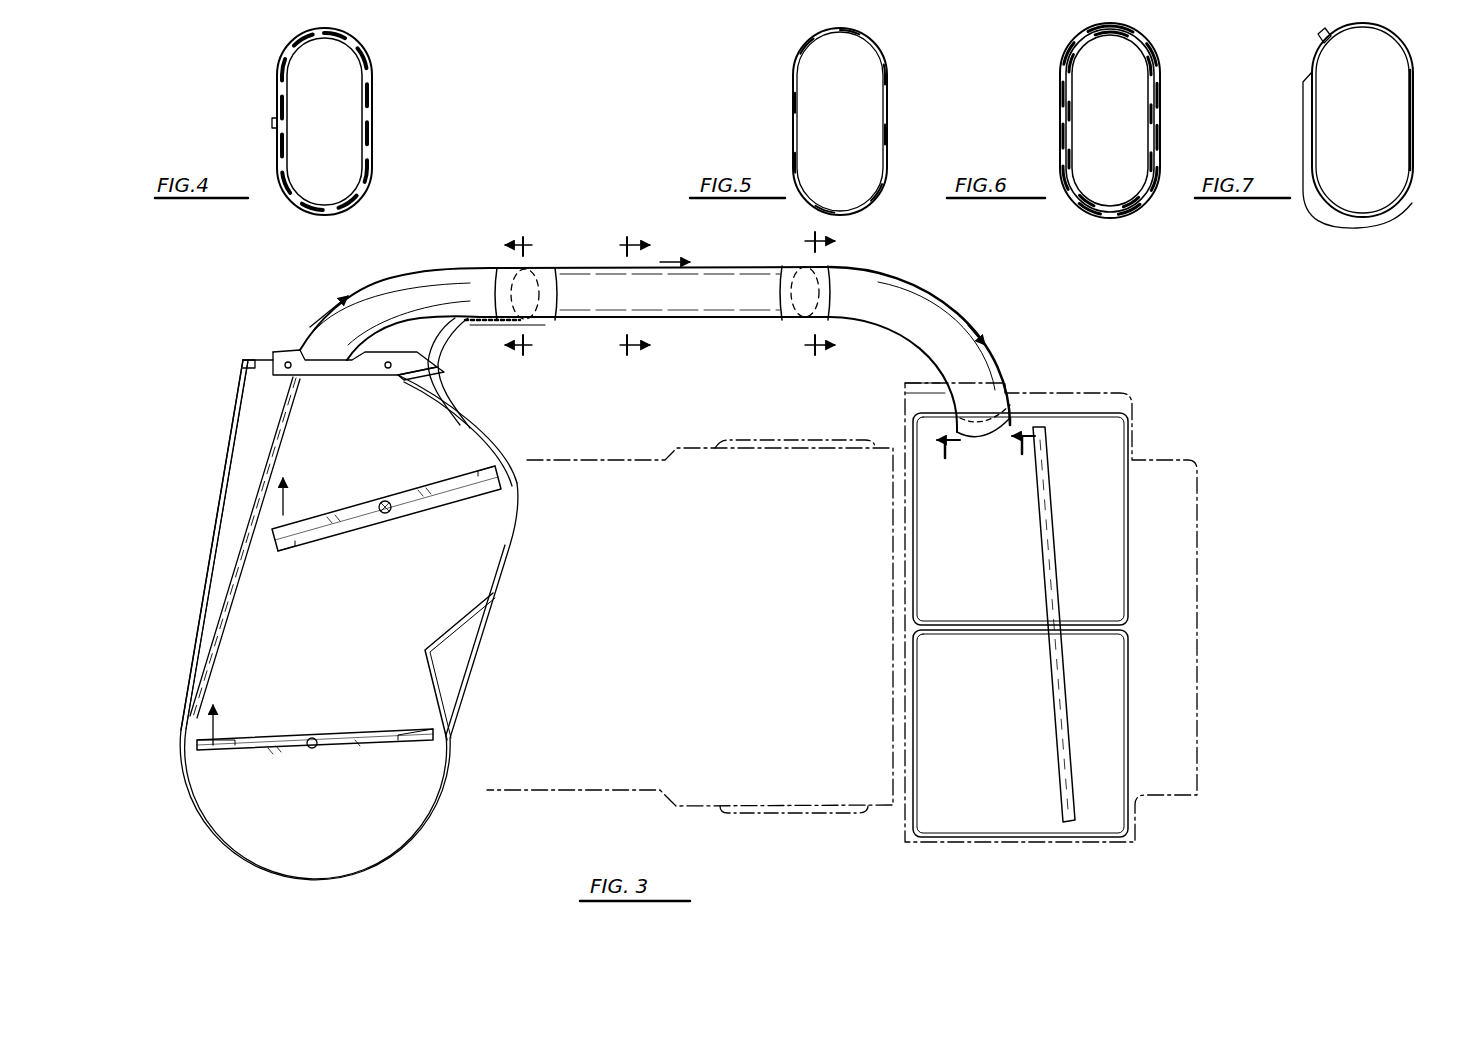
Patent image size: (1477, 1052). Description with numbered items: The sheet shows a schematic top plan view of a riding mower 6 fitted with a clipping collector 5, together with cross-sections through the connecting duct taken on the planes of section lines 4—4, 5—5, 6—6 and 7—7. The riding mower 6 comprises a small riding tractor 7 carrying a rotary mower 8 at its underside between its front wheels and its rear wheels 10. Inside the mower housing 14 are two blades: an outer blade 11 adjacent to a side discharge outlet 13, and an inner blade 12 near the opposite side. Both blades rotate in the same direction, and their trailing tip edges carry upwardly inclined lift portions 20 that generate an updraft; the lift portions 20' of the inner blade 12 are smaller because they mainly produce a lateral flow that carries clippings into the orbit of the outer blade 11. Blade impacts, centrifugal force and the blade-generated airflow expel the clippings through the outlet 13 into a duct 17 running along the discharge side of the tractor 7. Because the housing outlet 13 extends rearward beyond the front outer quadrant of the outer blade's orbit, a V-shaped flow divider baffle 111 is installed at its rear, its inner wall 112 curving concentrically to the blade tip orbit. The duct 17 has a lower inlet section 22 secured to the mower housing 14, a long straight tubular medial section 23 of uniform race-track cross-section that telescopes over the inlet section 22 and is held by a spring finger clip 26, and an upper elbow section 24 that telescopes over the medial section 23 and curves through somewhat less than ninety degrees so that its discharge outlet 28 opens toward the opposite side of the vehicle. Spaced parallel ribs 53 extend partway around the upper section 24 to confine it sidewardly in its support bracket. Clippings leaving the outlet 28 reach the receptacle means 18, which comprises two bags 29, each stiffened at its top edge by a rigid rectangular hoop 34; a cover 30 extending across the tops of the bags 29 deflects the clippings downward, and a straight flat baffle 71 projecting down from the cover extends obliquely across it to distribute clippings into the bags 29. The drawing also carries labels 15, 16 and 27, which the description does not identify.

In FIG. 3, the section line 4— 4 is at (526, 294).
In FIG. 3, the clipping collector 5 is at (1184, 378).
In FIG. 3, the riding mower 6 is at (823, 432).
In FIG. 3, the riding tractor 7 is at (978, 453).
In FIG. 3, the rotary mower 8 is at (430, 832).
In FIG. 3, the rear wheels 10 is at (730, 442).
In FIG. 3, the outer blade 11 is at (430, 505).
In FIG. 3, the inner blade 12 is at (355, 735).
In FIG. 3, the side discharge outlet 13 is at (285, 358).
In FIG. 3, the mower housing 14 is at (205, 594).
In FIG. 3, the inner plate 15 is at (218, 630).
In FIG. 3, the deflector 16 is at (450, 628).
In FIG. 3, the duct 17 is at (718, 325).
In FIG. 3, the receptacle means 18 is at (1148, 527).
In FIG. 3, the lift portions 20 is at (385, 516).
In FIG. 3, the lift portions of inner blade 20' is at (315, 740).
In FIG. 4, the lower inlet section 22 is at (290, 90).
In FIG. 3, the lower inlet section 22 is at (418, 272).
In FIG. 4, the tubular medial section 23 is at (372, 110).
In FIG. 5, the tubular medial section 23 is at (793, 105).
In FIG. 6, the tubular medial section 23 is at (1070, 110).
In FIG. 3, the tubular medial section 23 is at (770, 320).
In FIG. 6, the upper elbow section 24 is at (1060, 88).
In FIG. 3, the upper elbow section 24 is at (925, 292).
In FIG. 3, the spring finger clip 26 is at (510, 325).
In FIG. 3, the flexible connector 27 is at (470, 322).
In FIG. 7, the discharge outlet 28 is at (1400, 142).
In FIG. 3, the discharge outlet 28 is at (990, 432).
In FIG. 3, the bags 29 is at (1132, 462).
In FIG. 3, the cover 30 is at (1197, 590).
In FIG. 3, the rigid rectangular hoop 34 is at (1127, 562).
In FIG. 7, the spaced parallel ribs 53 is at (1305, 124).
In FIG. 3, the spaced parallel ribs 53 is at (945, 393).
In FIG. 3, the baffle 71 is at (1042, 570).
In FIG. 3, the flow divider baffle 111 is at (420, 390).
In FIG. 3, the inner wall 112 is at (450, 400).